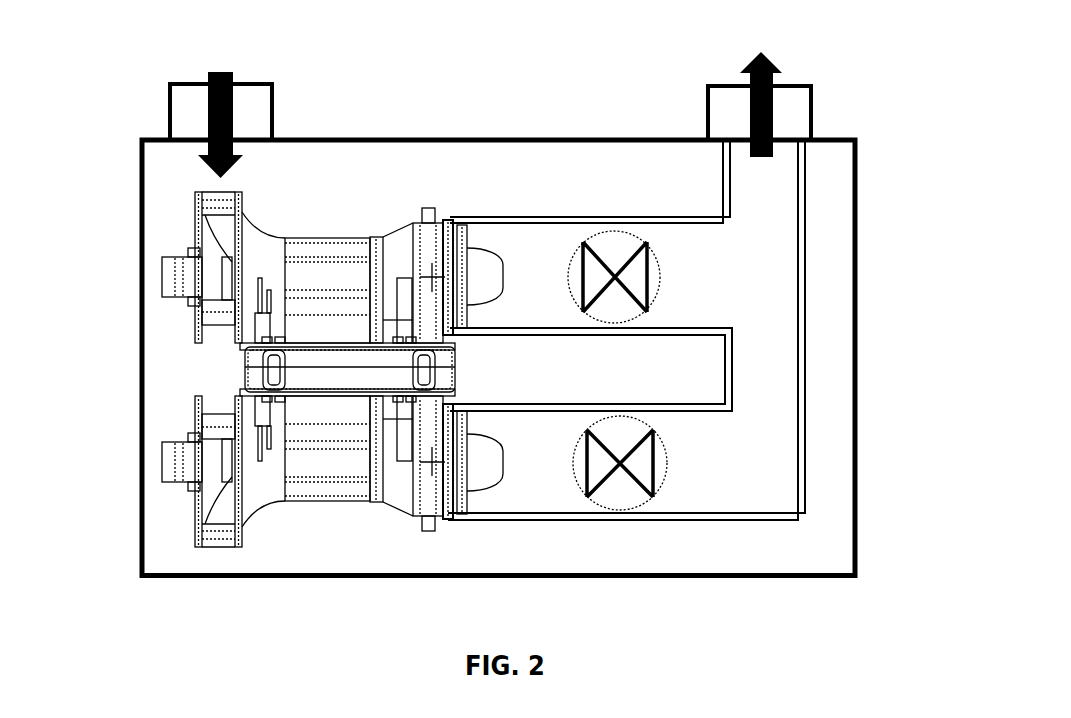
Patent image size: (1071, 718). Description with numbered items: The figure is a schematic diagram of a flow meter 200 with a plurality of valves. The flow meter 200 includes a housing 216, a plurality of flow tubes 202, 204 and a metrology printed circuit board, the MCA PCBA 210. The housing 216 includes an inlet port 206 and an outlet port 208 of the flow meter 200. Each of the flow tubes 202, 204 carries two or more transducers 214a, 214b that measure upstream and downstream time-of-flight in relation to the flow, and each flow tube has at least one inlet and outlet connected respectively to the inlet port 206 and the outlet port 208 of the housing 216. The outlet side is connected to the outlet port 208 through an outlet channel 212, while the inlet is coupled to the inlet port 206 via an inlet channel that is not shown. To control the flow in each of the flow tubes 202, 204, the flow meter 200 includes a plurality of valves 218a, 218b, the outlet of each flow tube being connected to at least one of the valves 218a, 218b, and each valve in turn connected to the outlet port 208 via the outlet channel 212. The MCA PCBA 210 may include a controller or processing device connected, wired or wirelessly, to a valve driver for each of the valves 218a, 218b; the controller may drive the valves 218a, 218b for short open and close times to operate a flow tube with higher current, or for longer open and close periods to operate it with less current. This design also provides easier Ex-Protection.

The flow meter 200 is at (488, 297).
The flow tube 202 is at (349, 470).
The flow tube 204 is at (349, 271).
The inlet port 206 is at (221, 100).
The outlet port 208 is at (759, 87).
The metrology printed circuit board (MCA PCBA) 210 is at (302, 352).
The outlet channel 212 is at (805, 402).
The transducer 214a is at (167, 245).
The transducer 214b is at (482, 245).
The housing 216 is at (860, 165).
The valve 218a is at (660, 277).
The valve 218b is at (663, 465).